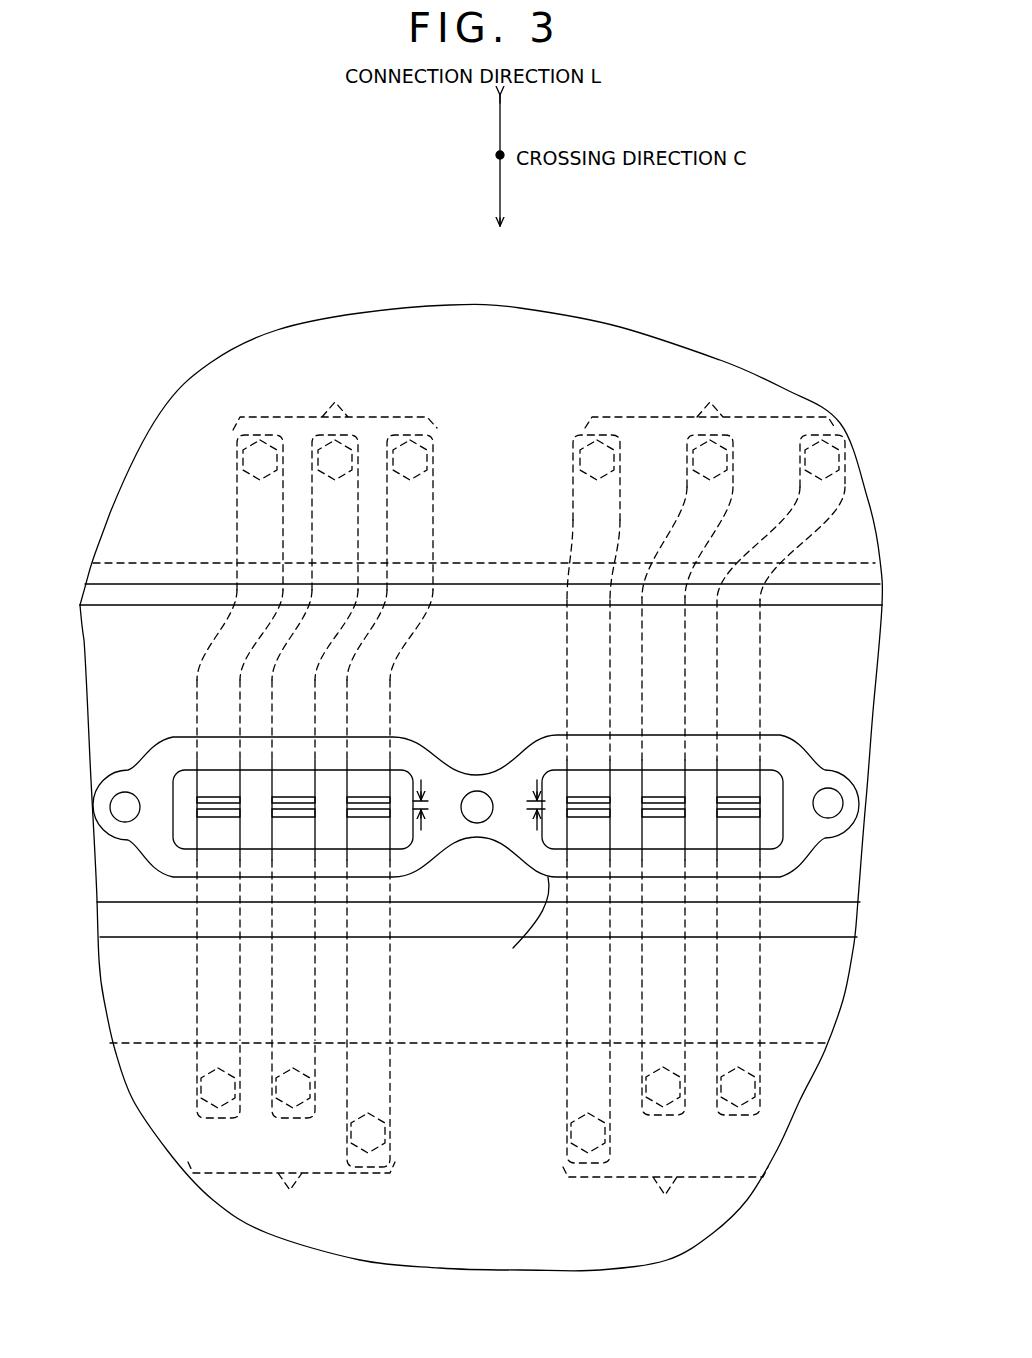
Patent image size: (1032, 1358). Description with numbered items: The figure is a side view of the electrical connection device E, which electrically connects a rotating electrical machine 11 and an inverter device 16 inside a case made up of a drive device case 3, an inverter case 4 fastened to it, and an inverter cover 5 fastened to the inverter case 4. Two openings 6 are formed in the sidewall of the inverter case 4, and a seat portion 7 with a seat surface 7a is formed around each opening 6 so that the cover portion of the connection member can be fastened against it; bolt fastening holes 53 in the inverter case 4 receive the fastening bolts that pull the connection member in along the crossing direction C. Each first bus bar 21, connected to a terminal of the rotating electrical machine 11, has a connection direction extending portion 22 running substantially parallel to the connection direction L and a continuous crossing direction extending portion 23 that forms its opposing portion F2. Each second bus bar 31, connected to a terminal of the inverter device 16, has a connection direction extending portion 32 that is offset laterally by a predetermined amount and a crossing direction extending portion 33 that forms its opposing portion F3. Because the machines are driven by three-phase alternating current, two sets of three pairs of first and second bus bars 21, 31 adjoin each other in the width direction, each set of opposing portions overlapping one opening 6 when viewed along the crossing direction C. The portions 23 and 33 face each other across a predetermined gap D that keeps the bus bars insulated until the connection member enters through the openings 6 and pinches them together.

The drive device case 3 is at (378, 1243).
The inverter case 4 is at (123, 613).
The inverter cover 5 is at (504, 306).
The opening 6 is at (398, 788).
The seat portion 7 is at (723, 733).
The seat surface 7a is at (543, 860).
The rotating electrical machine 11 is at (482, 1040).
The inverter device 16 is at (500, 570).
The first bus bar 21 is at (478, 1133).
The connection direction extending portion 22 is at (193, 997).
The crossing direction extending portion 23 is at (377, 817).
The second bus bar 31 is at (539, 481).
The connection direction extending portion 32 is at (207, 668).
The crossing direction extending portion 33 is at (282, 793).
The bolt fastening hole 53 is at (128, 815).
The electrical connection device E is at (207, 505).
The gap D is at (479, 805).